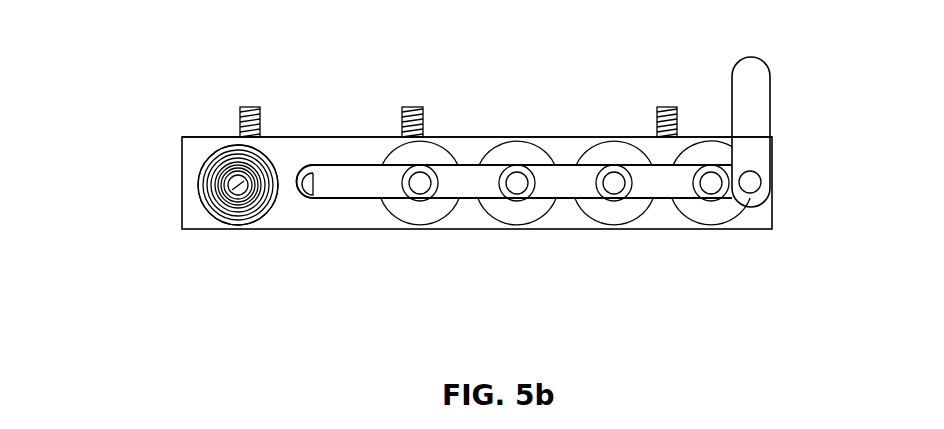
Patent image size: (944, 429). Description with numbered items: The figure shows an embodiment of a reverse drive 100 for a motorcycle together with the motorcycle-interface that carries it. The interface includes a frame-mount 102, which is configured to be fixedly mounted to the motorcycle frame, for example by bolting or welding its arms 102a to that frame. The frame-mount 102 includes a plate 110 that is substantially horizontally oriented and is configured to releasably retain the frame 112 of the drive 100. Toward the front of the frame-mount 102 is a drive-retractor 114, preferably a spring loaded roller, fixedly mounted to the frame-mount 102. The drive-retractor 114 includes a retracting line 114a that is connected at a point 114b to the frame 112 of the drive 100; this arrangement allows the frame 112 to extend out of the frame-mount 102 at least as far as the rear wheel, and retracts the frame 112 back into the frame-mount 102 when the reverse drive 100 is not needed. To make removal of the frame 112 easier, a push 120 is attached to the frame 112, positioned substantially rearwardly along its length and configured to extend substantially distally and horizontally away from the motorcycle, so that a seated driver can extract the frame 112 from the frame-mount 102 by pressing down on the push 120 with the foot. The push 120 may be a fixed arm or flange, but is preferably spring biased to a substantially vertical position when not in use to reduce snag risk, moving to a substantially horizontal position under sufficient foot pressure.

The reverse drive 100 is at (143, 97).
The frame-mount 102 is at (290, 147).
The arms 102a is at (258, 108).
The plate 110 is at (652, 231).
The frame 112 is at (470, 192).
The drive-retractor 114 is at (217, 208).
The retracting line 114a is at (262, 222).
The point 114b is at (296, 188).
The push 120 is at (755, 72).